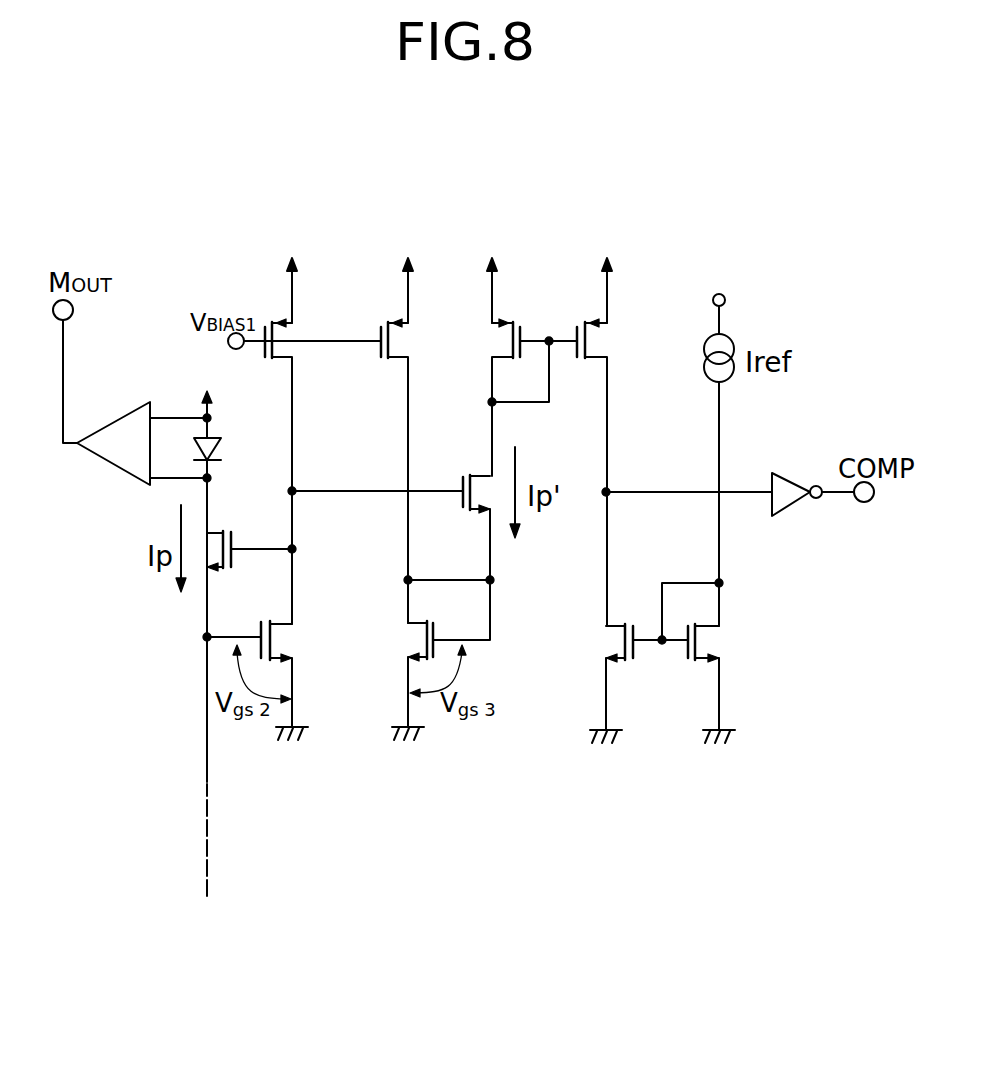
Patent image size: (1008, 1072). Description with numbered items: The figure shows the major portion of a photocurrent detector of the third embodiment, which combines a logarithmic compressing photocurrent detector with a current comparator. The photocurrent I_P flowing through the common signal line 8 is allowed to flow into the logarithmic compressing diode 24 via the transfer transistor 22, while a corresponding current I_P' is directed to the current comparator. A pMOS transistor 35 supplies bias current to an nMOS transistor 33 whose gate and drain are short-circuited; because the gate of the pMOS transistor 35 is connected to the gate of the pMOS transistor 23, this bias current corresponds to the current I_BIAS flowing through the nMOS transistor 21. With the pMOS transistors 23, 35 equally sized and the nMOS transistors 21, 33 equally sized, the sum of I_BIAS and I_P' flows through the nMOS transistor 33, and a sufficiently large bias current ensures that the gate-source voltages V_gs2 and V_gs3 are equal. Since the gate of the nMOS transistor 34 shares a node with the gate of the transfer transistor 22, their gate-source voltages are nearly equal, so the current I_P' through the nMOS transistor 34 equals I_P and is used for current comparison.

The common signal line 8 is at (204, 827).
The nMOS transistor 21 is at (285, 638).
The transfer transistor 22 is at (224, 526).
The pMOS transistor 23 is at (271, 362).
The logarithmic compressing diode 24 is at (227, 452).
The nMOS transistor 33 is at (406, 635).
The nMOS transistor 34 is at (460, 510).
The pMOS transistor 35 is at (380, 362).